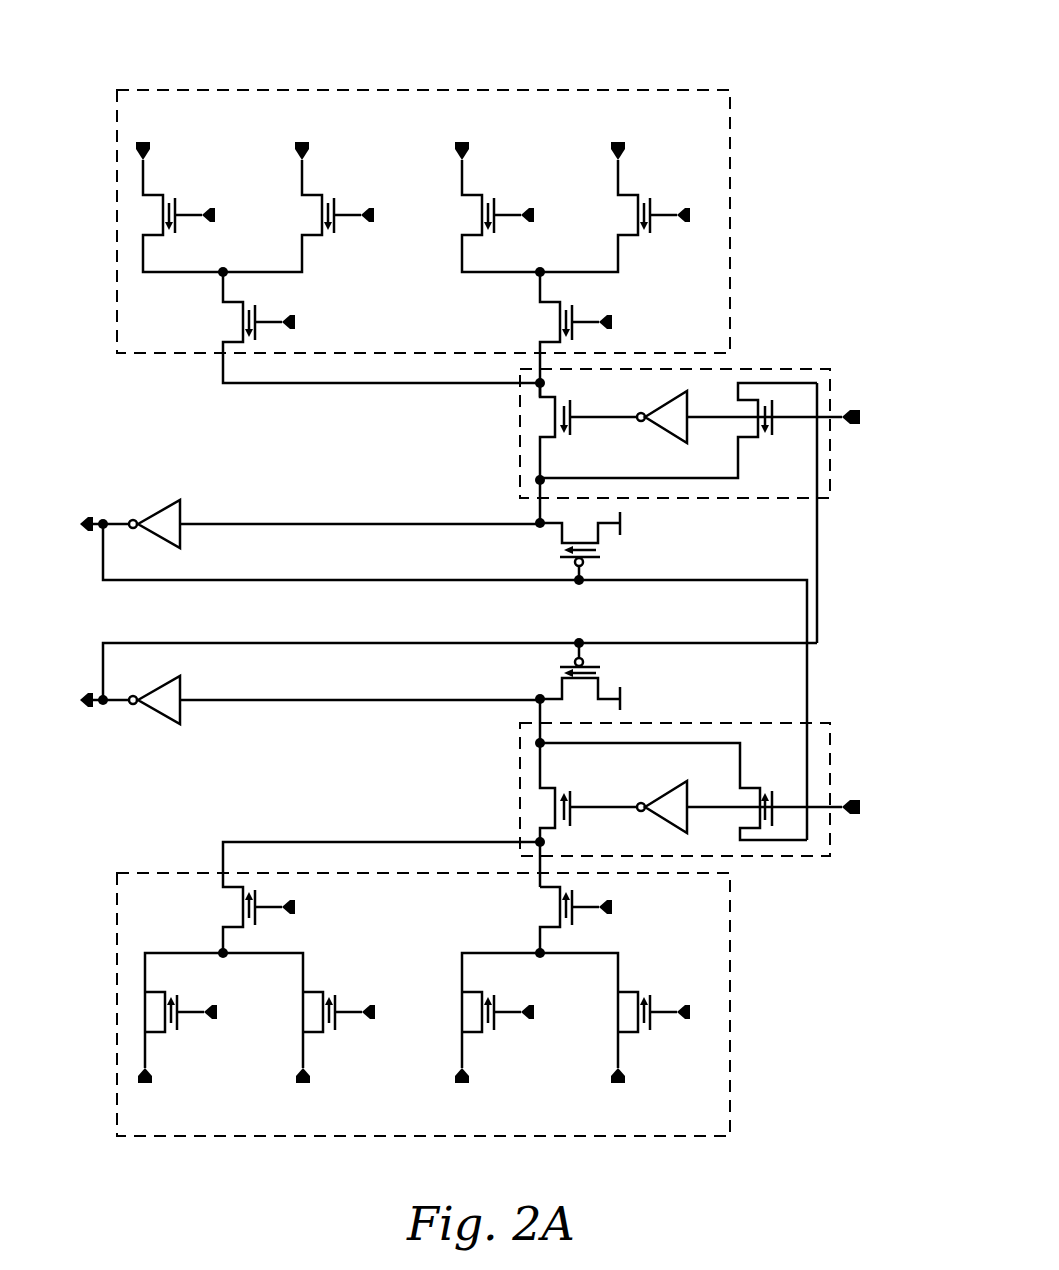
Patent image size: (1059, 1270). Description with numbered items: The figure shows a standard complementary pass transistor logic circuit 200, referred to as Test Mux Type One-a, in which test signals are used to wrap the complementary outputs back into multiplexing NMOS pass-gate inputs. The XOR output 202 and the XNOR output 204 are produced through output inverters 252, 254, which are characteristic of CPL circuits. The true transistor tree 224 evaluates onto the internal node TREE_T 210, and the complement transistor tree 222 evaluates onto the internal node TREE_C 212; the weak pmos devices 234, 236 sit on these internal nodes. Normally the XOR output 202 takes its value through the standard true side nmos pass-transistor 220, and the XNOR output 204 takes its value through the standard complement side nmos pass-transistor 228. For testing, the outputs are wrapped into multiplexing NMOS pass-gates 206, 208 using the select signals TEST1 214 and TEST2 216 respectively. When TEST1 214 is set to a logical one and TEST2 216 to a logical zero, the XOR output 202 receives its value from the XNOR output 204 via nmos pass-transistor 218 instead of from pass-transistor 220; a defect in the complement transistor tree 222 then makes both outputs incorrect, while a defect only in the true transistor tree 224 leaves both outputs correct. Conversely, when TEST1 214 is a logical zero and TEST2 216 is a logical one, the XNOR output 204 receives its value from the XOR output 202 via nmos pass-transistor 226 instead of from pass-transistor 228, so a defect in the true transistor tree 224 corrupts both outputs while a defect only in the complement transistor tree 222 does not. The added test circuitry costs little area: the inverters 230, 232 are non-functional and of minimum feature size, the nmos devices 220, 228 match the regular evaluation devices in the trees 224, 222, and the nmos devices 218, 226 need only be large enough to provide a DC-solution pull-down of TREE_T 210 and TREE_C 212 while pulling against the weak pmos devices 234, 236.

The CPL circuit 200 is at (764, 32).
The XOR output 202 is at (74, 536).
The XNOR output 204 is at (74, 708).
The multiplexing NMOS pass-gate 206 is at (778, 369).
The multiplexing NMOS pass-gate 208 is at (786, 856).
The internal node TREE_T 210 is at (288, 497).
The internal node TREE_C 212 is at (284, 702).
The select signal TEST1 214 is at (874, 397).
The select signal TEST2 216 is at (874, 789).
The nmos pass-transistor 218 is at (768, 442).
The true side nmos pass-transistor 220 is at (548, 417).
The complement transistor tree 222 is at (688, 1136).
The true transistor tree 224 is at (674, 90).
The nmos pass-transistor 226 is at (760, 814).
The complement side nmos pass-transistor 228 is at (548, 807).
The inverter 230 is at (662, 430).
The inverter 232 is at (662, 792).
The pmos device 234 is at (548, 541).
The pmos device 236 is at (548, 690).
The output inverter 252 is at (152, 476).
The output inverter 254 is at (142, 724).